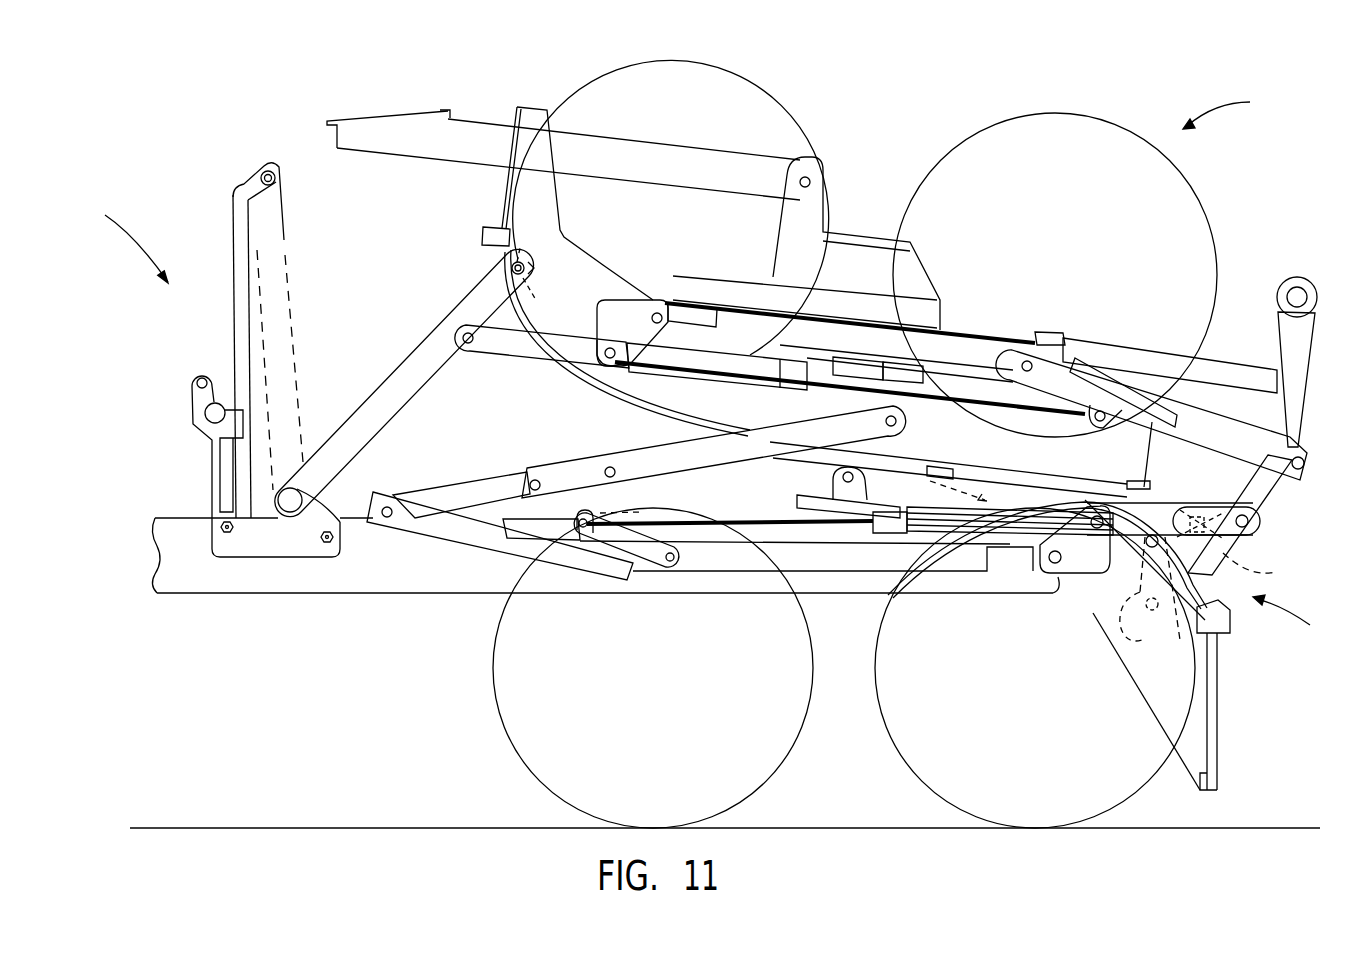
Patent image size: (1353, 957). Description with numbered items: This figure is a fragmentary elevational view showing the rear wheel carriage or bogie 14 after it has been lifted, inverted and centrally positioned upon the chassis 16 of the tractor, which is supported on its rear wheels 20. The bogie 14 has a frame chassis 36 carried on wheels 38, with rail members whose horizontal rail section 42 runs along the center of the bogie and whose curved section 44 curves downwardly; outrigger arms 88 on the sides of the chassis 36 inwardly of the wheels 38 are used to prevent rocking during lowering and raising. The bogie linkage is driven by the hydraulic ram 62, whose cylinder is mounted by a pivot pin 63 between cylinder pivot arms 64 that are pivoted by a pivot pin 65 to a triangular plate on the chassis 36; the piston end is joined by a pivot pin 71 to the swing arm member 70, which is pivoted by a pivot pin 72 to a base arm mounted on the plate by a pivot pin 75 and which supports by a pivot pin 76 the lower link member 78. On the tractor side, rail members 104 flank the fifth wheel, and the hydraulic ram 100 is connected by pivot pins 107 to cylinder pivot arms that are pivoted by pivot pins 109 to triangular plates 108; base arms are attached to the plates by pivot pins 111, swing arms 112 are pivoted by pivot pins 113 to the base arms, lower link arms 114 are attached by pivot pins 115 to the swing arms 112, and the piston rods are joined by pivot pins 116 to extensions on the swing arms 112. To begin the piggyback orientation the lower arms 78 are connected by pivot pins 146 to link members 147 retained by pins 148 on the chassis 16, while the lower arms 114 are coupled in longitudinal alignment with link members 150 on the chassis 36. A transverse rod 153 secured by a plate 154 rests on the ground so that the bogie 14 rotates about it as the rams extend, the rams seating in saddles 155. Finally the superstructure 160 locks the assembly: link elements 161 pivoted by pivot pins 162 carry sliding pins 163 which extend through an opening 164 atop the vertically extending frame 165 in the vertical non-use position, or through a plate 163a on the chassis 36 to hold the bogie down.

The rear wheel carriage or bogie 14 is at (1088, 261).
The chassis 16 is at (1218, 631).
The rear wheels 20 is at (906, 766).
The frame chassis 36 is at (840, 300).
The wheels 38 is at (967, 122).
The horizontal rail section 42 is at (952, 478).
The curved section 44 is at (603, 407).
The hydraulic ram 62 is at (735, 386).
The pivot pin 63 is at (436, 338).
The cylinder pivot arms 64 is at (516, 356).
The pivot pin 65 is at (612, 370).
The swing arm member 70 is at (1243, 438).
The pivot pin 71 is at (1101, 410).
The pivot pin 72 is at (1015, 352).
The pivot pin 75 is at (656, 300).
The pivot pin 76 is at (1299, 457).
The lower link member 78 is at (1278, 510).
The outrigger arms 88 is at (650, 150).
The hydraulic ram 100 is at (908, 548).
The rail member 104 is at (1147, 483).
The pivot pins 107 is at (1262, 528).
The triangular plates 108 is at (1083, 572).
The pivot pins 109 is at (1088, 503).
The pivot pins 111 is at (1053, 595).
The swing arms 112 is at (488, 540).
The pivot pins 113 is at (680, 552).
The lower link arms 114 is at (470, 478).
The pivot pins 115 is at (390, 518).
The pivot pins 116 is at (598, 520).
The pivot pins 146 is at (1157, 645).
The link member 147 is at (1120, 637).
The pins 148 is at (1170, 512).
The link members 150 is at (690, 465).
The transverse rod 153 is at (1292, 282).
The plate 154 is at (1258, 345).
The saddles 155 is at (1275, 572).
The superstructure 160 is at (293, 364).
The link elements 161 is at (272, 232).
The pivot pins 162 is at (292, 512).
The sliding pins 163 is at (508, 267).
The plate 163a is at (530, 236).
The opening 164 is at (264, 171).
The vertically extending frame 165 is at (238, 351).